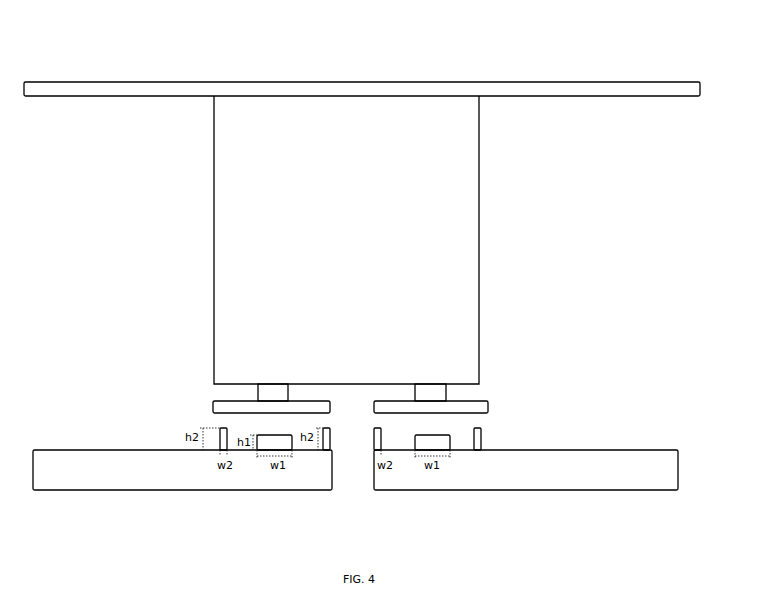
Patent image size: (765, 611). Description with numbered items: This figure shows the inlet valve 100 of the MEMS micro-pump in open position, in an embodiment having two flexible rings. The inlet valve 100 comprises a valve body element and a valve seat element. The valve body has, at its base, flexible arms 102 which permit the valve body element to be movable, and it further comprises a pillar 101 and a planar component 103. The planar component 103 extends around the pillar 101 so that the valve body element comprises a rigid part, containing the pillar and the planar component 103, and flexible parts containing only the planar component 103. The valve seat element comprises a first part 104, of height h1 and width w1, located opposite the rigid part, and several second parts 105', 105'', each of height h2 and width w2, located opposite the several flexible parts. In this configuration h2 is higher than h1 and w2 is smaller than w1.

The inlet valve 100 is at (664, 51).
The pillar 101 is at (466, 178).
The flexible arms 102 is at (203, 82).
The planar component 103 is at (247, 392).
The first part 104 is at (274, 451).
The second part 105' is at (325, 423).
The second part 105'' is at (352, 484).